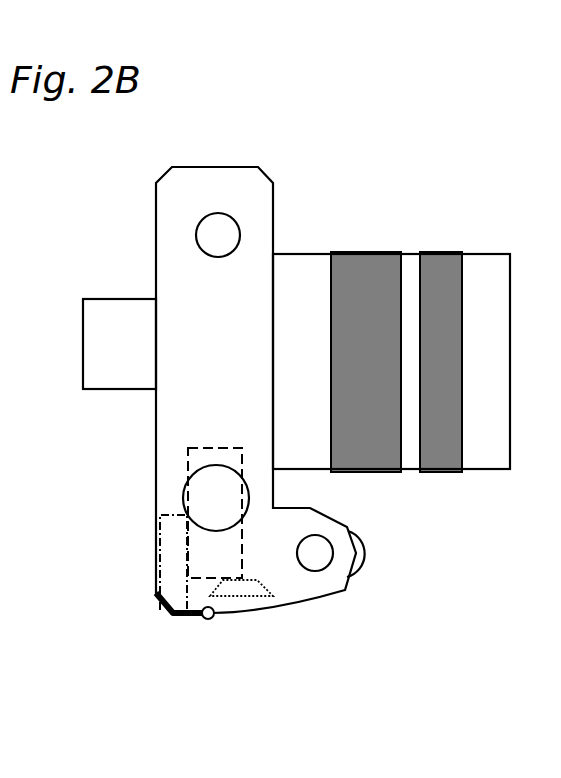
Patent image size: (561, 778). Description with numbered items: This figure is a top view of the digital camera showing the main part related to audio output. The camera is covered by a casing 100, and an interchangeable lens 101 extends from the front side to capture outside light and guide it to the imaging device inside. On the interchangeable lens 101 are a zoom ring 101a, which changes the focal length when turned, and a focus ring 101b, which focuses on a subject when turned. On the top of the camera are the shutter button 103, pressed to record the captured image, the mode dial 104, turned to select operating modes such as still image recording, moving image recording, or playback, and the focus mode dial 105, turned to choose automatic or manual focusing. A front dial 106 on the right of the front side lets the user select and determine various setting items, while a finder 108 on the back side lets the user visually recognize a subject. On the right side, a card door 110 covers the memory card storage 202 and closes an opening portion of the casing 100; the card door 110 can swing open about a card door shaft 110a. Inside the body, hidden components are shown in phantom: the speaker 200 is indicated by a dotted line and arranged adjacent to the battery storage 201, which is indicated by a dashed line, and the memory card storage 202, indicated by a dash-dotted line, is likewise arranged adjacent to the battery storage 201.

The casing 100 is at (156, 560).
The interchangeable lens 101 is at (487, 253).
The zoom ring 101a is at (447, 252).
The focus ring 101b is at (370, 250).
The shutter button 103 is at (328, 567).
The mode dial 104 is at (185, 493).
The focus mode dial 105 is at (196, 229).
The front dial 106 is at (365, 552).
The finder 108 is at (115, 389).
The card door 110 is at (170, 615).
The card door shaft 110a is at (205, 620).
The speaker 200 is at (248, 598).
The battery storage 201 is at (242, 542).
The memory card storage 202 is at (175, 515).